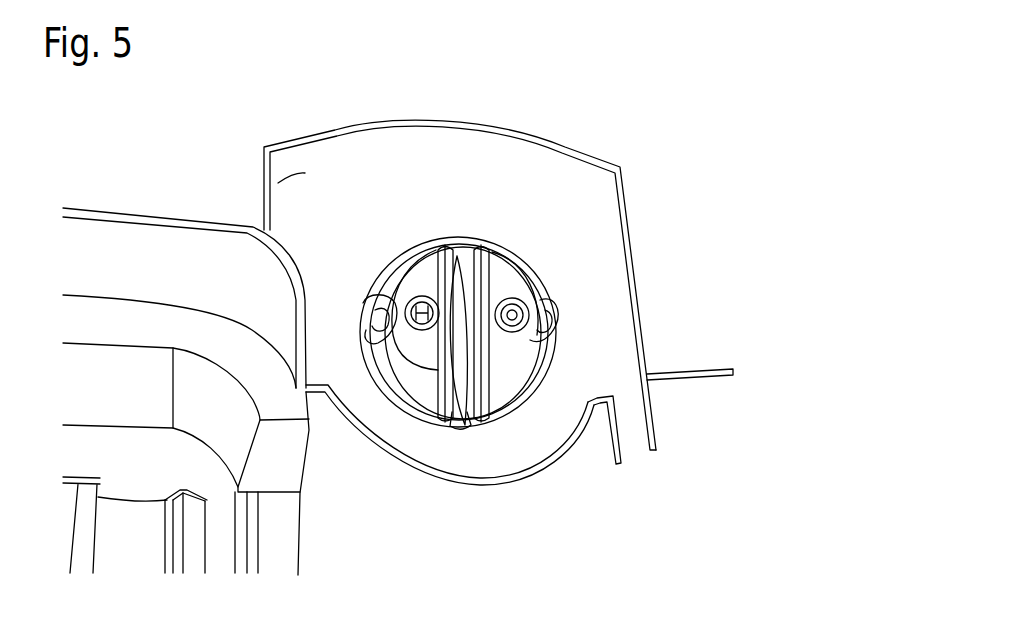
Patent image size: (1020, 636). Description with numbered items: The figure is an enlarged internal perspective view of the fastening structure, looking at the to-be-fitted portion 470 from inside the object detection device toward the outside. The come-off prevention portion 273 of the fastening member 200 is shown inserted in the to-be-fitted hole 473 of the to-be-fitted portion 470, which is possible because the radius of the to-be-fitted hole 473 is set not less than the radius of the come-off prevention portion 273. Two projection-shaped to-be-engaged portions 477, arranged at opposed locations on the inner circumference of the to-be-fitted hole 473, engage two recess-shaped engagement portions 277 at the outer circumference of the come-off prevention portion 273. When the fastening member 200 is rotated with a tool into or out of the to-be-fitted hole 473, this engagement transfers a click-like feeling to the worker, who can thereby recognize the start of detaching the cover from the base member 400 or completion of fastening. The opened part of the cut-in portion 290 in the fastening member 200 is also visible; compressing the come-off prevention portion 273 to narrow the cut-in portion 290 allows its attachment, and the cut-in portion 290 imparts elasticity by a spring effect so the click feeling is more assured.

The fastening member 200 is at (502, 287).
The come-off prevention portion 273 is at (505, 262).
The engagement portion 277 is at (367, 338).
The cut-in portion 290 is at (458, 266).
The base member 400 is at (378, 518).
The to-be-fitted portion 470 is at (266, 176).
The to-be-fitted hole 473 is at (466, 424).
The to-be-engaged portion 477 is at (368, 336).